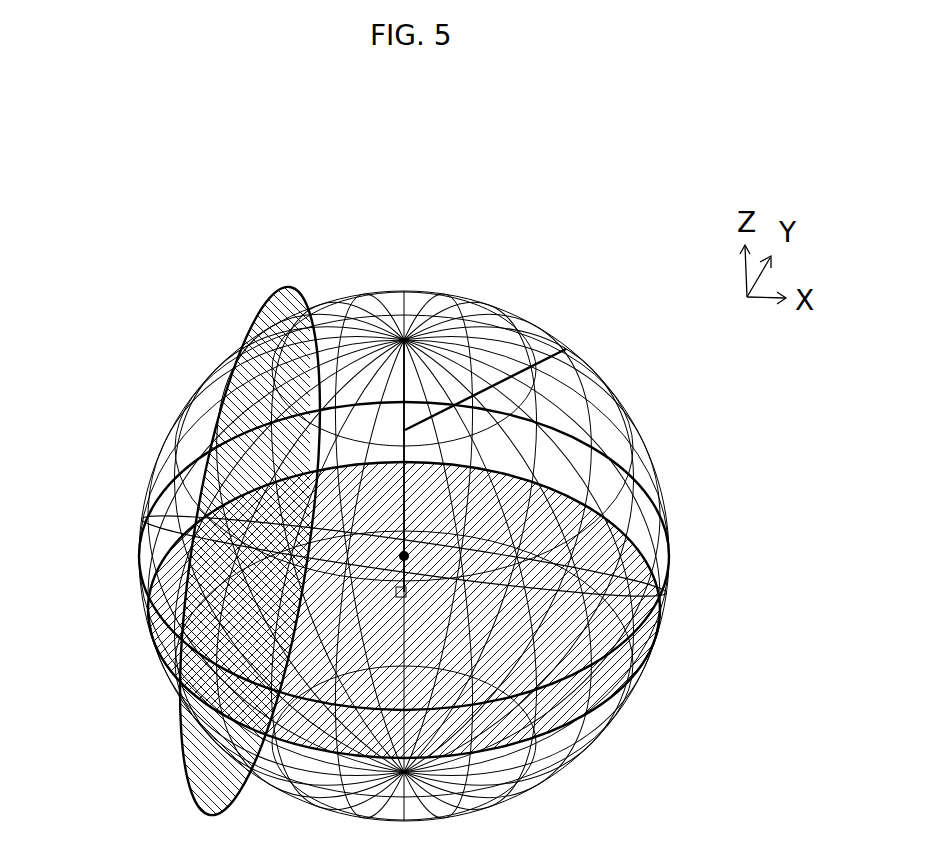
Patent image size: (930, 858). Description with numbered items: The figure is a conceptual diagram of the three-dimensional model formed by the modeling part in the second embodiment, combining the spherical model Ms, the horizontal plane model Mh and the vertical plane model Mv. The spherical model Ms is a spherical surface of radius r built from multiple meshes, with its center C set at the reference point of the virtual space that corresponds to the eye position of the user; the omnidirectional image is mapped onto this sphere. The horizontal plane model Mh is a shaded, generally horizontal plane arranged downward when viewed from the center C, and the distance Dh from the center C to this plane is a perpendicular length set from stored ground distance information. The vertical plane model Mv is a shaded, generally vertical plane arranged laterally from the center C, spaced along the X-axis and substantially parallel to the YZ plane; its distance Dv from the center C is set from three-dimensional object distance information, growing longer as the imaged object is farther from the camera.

The spherical model Ms is at (165, 414).
The horizontal plane model Mh is at (146, 626).
The vertical plane model Mv is at (260, 298).
The distance from the center to the vertical plane model Dv is at (404, 337).
The distance from the center to the horizontal plane model Dh is at (655, 641).
The center C is at (406, 556).
The radius r is at (566, 349).